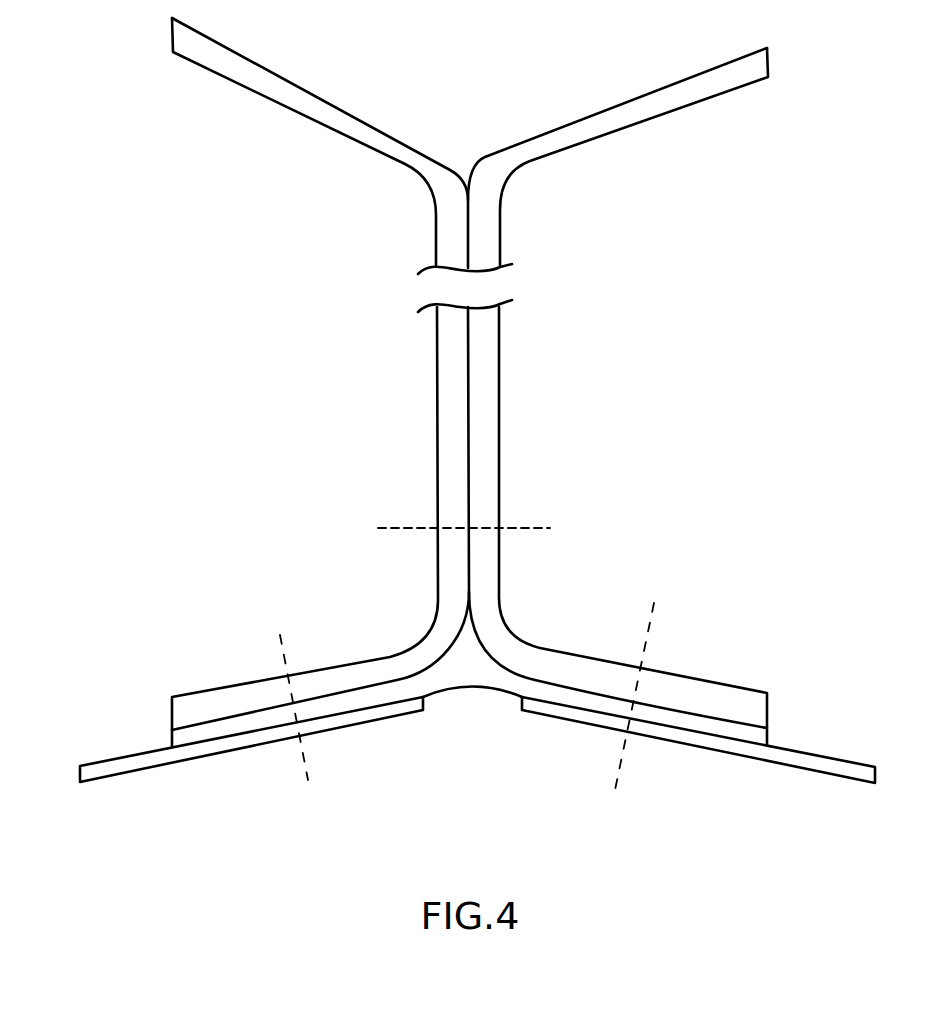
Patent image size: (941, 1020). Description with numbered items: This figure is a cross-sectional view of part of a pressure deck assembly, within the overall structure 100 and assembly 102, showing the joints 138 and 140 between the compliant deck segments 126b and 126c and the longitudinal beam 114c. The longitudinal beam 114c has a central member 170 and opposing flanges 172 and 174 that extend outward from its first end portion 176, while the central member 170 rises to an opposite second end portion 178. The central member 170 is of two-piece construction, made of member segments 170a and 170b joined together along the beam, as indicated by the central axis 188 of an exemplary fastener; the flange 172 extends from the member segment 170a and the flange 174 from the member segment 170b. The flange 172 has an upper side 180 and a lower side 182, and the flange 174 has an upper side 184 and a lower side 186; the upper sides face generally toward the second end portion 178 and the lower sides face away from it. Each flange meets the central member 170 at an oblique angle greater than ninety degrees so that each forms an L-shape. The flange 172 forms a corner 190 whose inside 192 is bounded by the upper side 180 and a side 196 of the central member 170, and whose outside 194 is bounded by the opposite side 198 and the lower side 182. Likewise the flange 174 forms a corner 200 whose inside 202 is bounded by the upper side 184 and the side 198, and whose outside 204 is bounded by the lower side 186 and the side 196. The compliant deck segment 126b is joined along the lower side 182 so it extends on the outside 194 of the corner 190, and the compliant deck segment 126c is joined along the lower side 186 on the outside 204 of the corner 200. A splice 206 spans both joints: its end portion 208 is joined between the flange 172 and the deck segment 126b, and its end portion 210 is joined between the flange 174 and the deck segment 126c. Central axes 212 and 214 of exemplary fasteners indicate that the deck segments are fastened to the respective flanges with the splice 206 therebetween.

The aircraft structure 100 is at (848, 157).
The wing assembly 102 is at (877, 228).
The longitudinal beam 114c is at (135, 185).
The compliant deck segment 126b is at (775, 757).
The compliant deck segment 126c is at (132, 762).
The joint 138 is at (658, 780).
The joint 140 is at (255, 785).
The central member 170 is at (437, 437).
The member segment 170a is at (488, 497).
The member segment 170b is at (448, 480).
The flange 172 is at (670, 687).
The flange 174 is at (243, 695).
The first end portion 176 is at (515, 608).
The second end portion 178 is at (514, 201).
The upper side 180 is at (708, 683).
The lower side 182 is at (722, 722).
The upper side 184 is at (316, 664).
The lower side 186 is at (316, 717).
The central axis 188 is at (557, 528).
The corner 190 is at (508, 581).
The inside 192 is at (520, 510).
The outside 194 is at (393, 430).
The side 196 is at (500, 435).
The side 198 is at (437, 472).
The corner 200 is at (437, 541).
The inside 202 is at (332, 462).
The outside 204 is at (528, 465).
The splice 206 is at (433, 687).
The end portion 208 is at (693, 718).
The end portion 210 is at (272, 718).
The central axis 212 is at (655, 600).
The central axis 214 is at (275, 613).